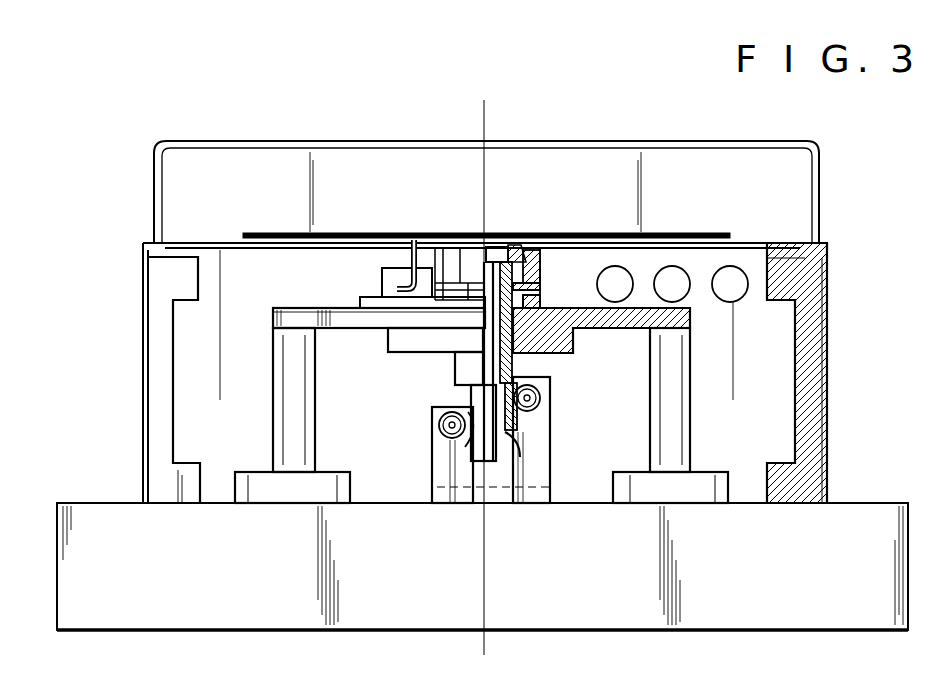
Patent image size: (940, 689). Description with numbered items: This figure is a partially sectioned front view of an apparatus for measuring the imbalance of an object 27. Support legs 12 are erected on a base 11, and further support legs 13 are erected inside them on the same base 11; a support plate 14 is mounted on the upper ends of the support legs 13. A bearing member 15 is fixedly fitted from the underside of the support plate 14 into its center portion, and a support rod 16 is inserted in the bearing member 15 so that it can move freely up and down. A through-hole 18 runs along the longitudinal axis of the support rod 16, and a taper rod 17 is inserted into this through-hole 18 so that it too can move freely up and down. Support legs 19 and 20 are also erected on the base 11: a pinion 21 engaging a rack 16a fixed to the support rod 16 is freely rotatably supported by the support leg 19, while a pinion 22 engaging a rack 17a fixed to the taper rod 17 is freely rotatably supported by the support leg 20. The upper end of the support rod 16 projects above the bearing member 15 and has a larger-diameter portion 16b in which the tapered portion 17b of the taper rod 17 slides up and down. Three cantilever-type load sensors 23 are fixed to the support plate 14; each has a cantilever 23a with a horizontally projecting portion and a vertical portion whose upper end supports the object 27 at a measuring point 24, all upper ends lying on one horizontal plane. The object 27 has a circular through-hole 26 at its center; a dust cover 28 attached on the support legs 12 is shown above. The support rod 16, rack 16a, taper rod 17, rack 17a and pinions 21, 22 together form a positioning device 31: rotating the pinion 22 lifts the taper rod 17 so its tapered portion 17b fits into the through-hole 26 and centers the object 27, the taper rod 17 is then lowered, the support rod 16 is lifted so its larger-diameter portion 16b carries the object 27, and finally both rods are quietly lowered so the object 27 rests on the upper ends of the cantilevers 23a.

The base 11 is at (881, 503).
The support legs 12 is at (160, 404).
The support legs 13 is at (300, 405).
The support plate 14 is at (290, 310).
The bearing member 15 is at (578, 348).
The support rod 16 is at (507, 432).
The rack 16a is at (517, 425).
The larger-diameter portion 16b is at (535, 262).
The taper rod 17 is at (488, 462).
The rack 17a is at (463, 447).
The tapered portion 17b is at (491, 247).
The through-hole 18 is at (530, 300).
The support leg 19 is at (537, 483).
The support leg 20 is at (440, 475).
The pinion 21 is at (548, 396).
The pinion 22 is at (432, 430).
The load sensor 23 is at (378, 272).
The cantilever 23a is at (378, 295).
The measuring point 24 is at (414, 240).
The through-hole 26 is at (519, 246).
The object 27 is at (590, 233).
The dust cover 28 is at (535, 141).
The positioning device 31 is at (452, 392).